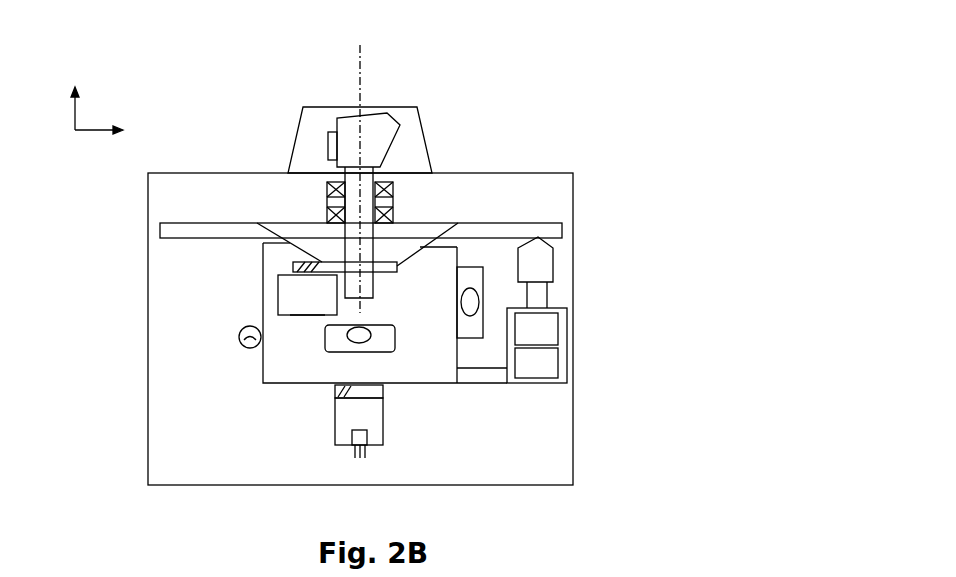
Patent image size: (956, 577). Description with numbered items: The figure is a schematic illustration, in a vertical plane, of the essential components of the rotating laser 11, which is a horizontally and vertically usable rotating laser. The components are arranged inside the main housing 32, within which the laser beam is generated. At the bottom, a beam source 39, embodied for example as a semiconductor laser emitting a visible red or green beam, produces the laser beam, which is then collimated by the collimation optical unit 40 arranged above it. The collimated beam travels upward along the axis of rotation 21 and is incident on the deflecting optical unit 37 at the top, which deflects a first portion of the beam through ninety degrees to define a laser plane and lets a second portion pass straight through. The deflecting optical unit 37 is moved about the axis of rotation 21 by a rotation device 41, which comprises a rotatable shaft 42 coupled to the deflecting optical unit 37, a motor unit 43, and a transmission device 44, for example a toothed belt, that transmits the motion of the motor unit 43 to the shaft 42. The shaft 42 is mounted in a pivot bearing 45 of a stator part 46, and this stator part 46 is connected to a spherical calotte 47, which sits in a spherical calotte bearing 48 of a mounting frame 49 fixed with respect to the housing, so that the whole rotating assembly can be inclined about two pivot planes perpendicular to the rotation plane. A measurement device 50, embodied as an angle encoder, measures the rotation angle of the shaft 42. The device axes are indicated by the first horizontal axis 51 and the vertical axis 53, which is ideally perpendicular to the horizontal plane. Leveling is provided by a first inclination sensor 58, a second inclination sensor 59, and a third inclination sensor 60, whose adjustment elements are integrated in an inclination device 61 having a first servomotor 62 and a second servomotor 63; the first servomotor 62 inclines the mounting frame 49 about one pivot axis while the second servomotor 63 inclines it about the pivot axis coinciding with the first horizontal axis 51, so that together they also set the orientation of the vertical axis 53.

The rotating laser 11 is at (523, 100).
The axis of rotation 21 is at (362, 63).
The main housing 32 is at (575, 293).
The deflecting optical unit 37 is at (385, 135).
The beam source 39 is at (367, 443).
The collimation optical unit 40 is at (335, 395).
The rotation device 41 is at (300, 322).
The rotatable shaft 42 is at (370, 288).
The motor unit 43 is at (290, 295).
The transmission device 44 is at (264, 260).
The pivot bearing 45 is at (327, 205).
The stator part 46 is at (440, 373).
The spherical calotte 47 is at (455, 222).
The spherical calotte bearing 48 is at (417, 250).
The mounting frame 49 is at (512, 223).
The measurement device 50 is at (397, 265).
The first horizontal axis 51 is at (110, 147).
The vertical axis 53 is at (58, 100).
The first inclination sensor 58 is at (368, 332).
The second inclination sensor 59 is at (245, 348).
The third inclination sensor 60 is at (470, 303).
The inclination device 61 is at (534, 392).
The first servomotor 62 is at (536, 329).
The second servomotor 63 is at (536, 363).